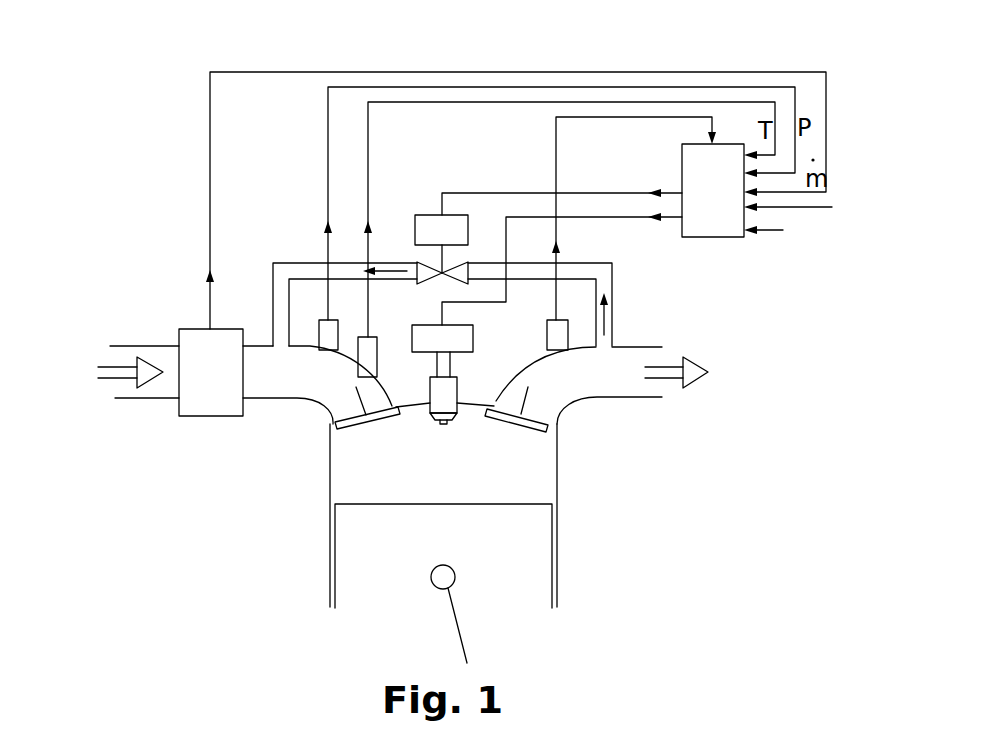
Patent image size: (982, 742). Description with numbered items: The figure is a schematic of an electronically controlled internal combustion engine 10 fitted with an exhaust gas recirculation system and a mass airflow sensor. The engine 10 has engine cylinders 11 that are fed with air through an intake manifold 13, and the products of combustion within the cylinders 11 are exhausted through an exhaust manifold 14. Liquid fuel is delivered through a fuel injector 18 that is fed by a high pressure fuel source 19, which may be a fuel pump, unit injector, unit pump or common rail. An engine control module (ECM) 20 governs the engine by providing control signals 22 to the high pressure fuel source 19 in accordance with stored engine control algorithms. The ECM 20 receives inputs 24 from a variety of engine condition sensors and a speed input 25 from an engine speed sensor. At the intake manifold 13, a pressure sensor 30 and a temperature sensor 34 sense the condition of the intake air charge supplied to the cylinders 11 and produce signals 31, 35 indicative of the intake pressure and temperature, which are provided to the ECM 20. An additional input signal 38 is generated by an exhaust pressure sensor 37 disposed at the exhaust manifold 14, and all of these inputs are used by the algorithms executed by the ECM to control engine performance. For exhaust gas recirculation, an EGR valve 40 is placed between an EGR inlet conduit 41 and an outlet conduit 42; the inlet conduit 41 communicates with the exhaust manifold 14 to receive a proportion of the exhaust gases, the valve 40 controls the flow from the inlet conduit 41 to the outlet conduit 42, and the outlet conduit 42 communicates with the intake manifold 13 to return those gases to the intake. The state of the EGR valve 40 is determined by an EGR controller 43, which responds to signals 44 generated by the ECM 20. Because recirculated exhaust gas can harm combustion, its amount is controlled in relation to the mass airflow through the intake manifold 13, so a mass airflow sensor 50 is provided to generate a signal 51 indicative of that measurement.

The engine 10 is at (218, 487).
The engine cylinders 11 is at (329, 487).
The intake manifold 13 is at (131, 400).
The exhaust manifold 14 is at (628, 398).
The fuel injector 18 is at (443, 426).
The high pressure fuel source 19 is at (467, 353).
The engine control module (ECM) 20 is at (710, 238).
The control signals 22 is at (617, 220).
The inputs 24 is at (770, 233).
The speed input 25 is at (832, 205).
The pressure sensor 30 is at (334, 320).
The pressure signal 31 is at (326, 177).
The temperature sensor 34 is at (373, 337).
The temperature signal 35 is at (370, 128).
The exhaust pressure sensor 37 is at (546, 328).
The input signal 38 is at (556, 292).
The exhaust gas recirculation (EGR) valve 40 is at (445, 276).
The EGR inlet conduit 41 is at (613, 305).
The outlet conduit 42 is at (272, 275).
The EGR controller 43 is at (423, 215).
The signals 44 is at (482, 193).
The mass airflow sensor 50 is at (214, 418).
The mass airflow signal 51 is at (208, 297).